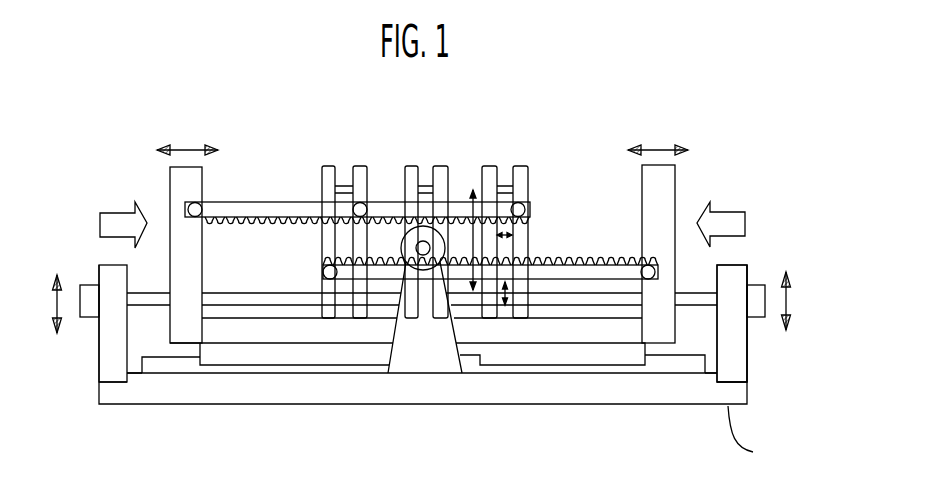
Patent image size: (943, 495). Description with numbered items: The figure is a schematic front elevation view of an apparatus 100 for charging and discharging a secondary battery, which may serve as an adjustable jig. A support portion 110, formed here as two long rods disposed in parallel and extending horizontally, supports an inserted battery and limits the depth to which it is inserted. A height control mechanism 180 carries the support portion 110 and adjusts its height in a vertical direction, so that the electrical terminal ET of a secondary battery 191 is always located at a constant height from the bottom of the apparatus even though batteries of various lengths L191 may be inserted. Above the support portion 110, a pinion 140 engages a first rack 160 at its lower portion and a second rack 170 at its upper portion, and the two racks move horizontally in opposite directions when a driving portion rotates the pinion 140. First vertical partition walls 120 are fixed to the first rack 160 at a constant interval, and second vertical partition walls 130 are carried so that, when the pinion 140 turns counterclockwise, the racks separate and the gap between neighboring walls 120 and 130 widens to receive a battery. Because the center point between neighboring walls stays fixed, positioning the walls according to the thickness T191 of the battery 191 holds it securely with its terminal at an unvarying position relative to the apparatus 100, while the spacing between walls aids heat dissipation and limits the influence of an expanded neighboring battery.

The apparatus for charging and discharging 100 is at (112, 100).
The support portion 110 is at (693, 293).
The first vertical partition walls 120 is at (324, 165).
The second vertical partition walls 130 is at (360, 165).
The pinion 140 is at (413, 206).
The first rack 160 is at (570, 268).
The second rack 170 is at (292, 197).
The height control mechanism 180 is at (748, 348).
The secondary battery 191 is at (320, 197).
The length of battery L191 is at (473, 242).
The thickness of battery T191 is at (505, 237).
The electrical terminal ET is at (505, 307).